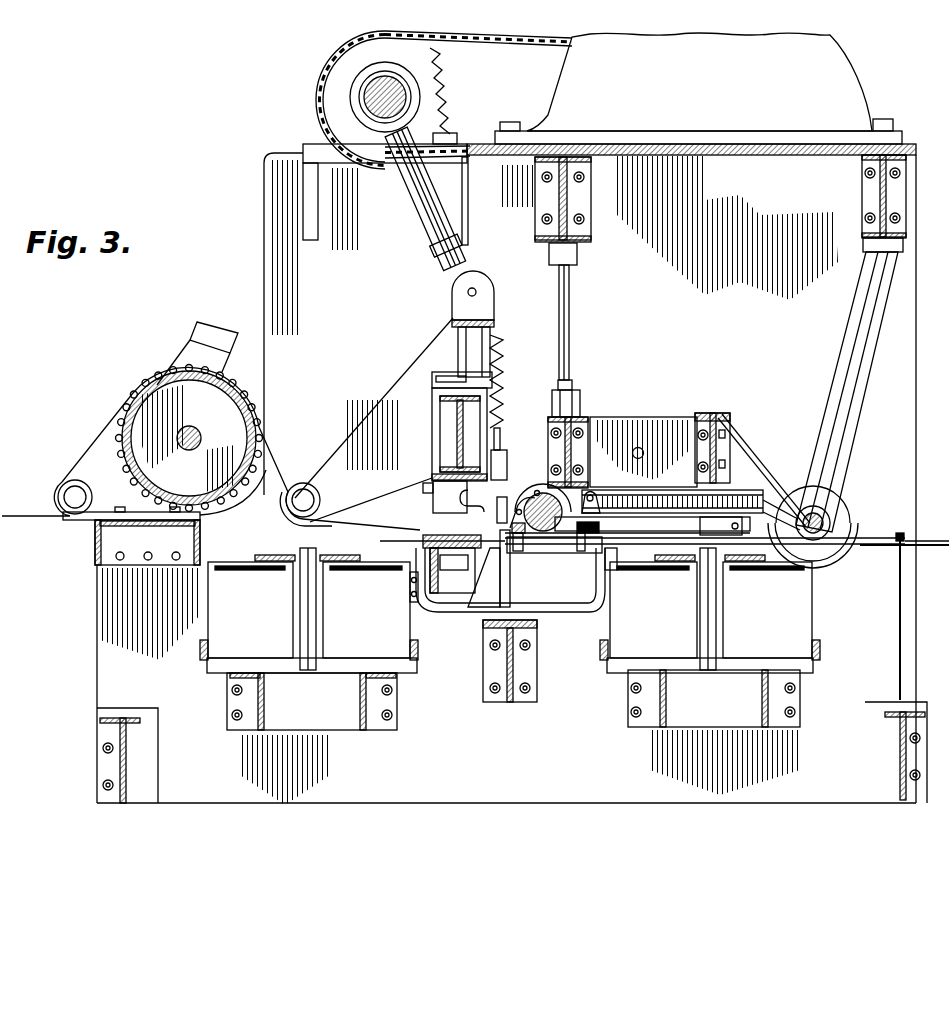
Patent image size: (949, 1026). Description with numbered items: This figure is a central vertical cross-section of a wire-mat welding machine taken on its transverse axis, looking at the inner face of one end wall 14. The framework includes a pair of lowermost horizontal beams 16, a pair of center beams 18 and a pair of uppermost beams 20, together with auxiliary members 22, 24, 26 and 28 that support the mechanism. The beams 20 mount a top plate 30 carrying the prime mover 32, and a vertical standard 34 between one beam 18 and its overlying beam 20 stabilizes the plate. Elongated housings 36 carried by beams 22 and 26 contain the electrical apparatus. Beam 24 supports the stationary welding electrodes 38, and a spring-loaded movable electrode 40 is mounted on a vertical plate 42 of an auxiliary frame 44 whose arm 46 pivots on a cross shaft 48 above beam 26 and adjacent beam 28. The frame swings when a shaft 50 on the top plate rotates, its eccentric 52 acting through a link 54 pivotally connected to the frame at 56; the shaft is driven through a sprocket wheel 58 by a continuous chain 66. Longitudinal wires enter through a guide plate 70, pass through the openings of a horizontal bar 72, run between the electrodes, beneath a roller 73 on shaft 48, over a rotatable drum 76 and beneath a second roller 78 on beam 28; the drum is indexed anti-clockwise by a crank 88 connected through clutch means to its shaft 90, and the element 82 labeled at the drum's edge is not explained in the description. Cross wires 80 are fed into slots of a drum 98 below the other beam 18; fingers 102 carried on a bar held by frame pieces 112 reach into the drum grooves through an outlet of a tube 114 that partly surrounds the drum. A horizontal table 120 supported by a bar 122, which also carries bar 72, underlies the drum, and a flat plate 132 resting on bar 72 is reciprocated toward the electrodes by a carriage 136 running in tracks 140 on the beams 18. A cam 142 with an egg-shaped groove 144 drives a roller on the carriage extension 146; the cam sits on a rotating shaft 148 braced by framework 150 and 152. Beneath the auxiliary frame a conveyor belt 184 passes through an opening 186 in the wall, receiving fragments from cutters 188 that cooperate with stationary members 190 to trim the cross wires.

The end wall 14 is at (506, 479).
The lowermost horizontal beam 16 is at (130, 775).
The center beam 18 is at (574, 442).
The uppermost beam 20 is at (562, 193).
The auxiliary member 22 is at (762, 698).
The auxiliary member 24 is at (520, 682).
The auxiliary member 26 is at (360, 704).
The auxiliary member 28 is at (95, 535).
The top plate 30 is at (737, 160).
The prime mover 32 is at (833, 95).
The vertical standard 34 is at (570, 340).
The elongated housing 36 is at (242, 585).
The stationary welding electrode 38 is at (508, 598).
The movable welding electrode 40 is at (497, 520).
The vertical plate 42 is at (492, 332).
The auxiliary frame 44 is at (412, 362).
The arm 46 is at (345, 442).
The cross shaft 48 is at (298, 485).
The shaft 50 is at (372, 98).
The eccentric 52 is at (357, 83).
The link 54 is at (425, 196).
The pivotal connection 56 is at (462, 290).
The sprocket wheel 58 is at (437, 100).
The continuous chain 66 is at (664, 533).
The plate 70 is at (900, 531).
The horizontal bar 72 is at (636, 585).
The roller 73 is at (312, 499).
The drum 76 is at (126, 405).
The roller 78 is at (78, 482).
The cross wire 80 is at (540, 492).
The belt 82 is at (146, 395).
The crank 88 is at (182, 358).
The shaft 90 is at (198, 436).
The drum 98 is at (575, 496).
The finger 102 is at (452, 569).
The frame piece 112 is at (572, 466).
The tube 114 is at (518, 497).
The table 120 is at (578, 550).
The bar 122 is at (520, 550).
The plate 132 is at (570, 548).
The carriage 136 is at (627, 526).
The track 140 is at (660, 494).
The cam 142 is at (840, 500).
The egg-shaped groove 144 is at (845, 515).
The extension 146 is at (781, 511).
The rotating shaft 148 is at (828, 560).
The framework 150 is at (840, 415).
The framework 152 is at (745, 463).
The conveyor belt 184 is at (470, 580).
The opening 186 is at (410, 580).
The cutter 188 is at (445, 522).
The stationary member 190 is at (423, 541).